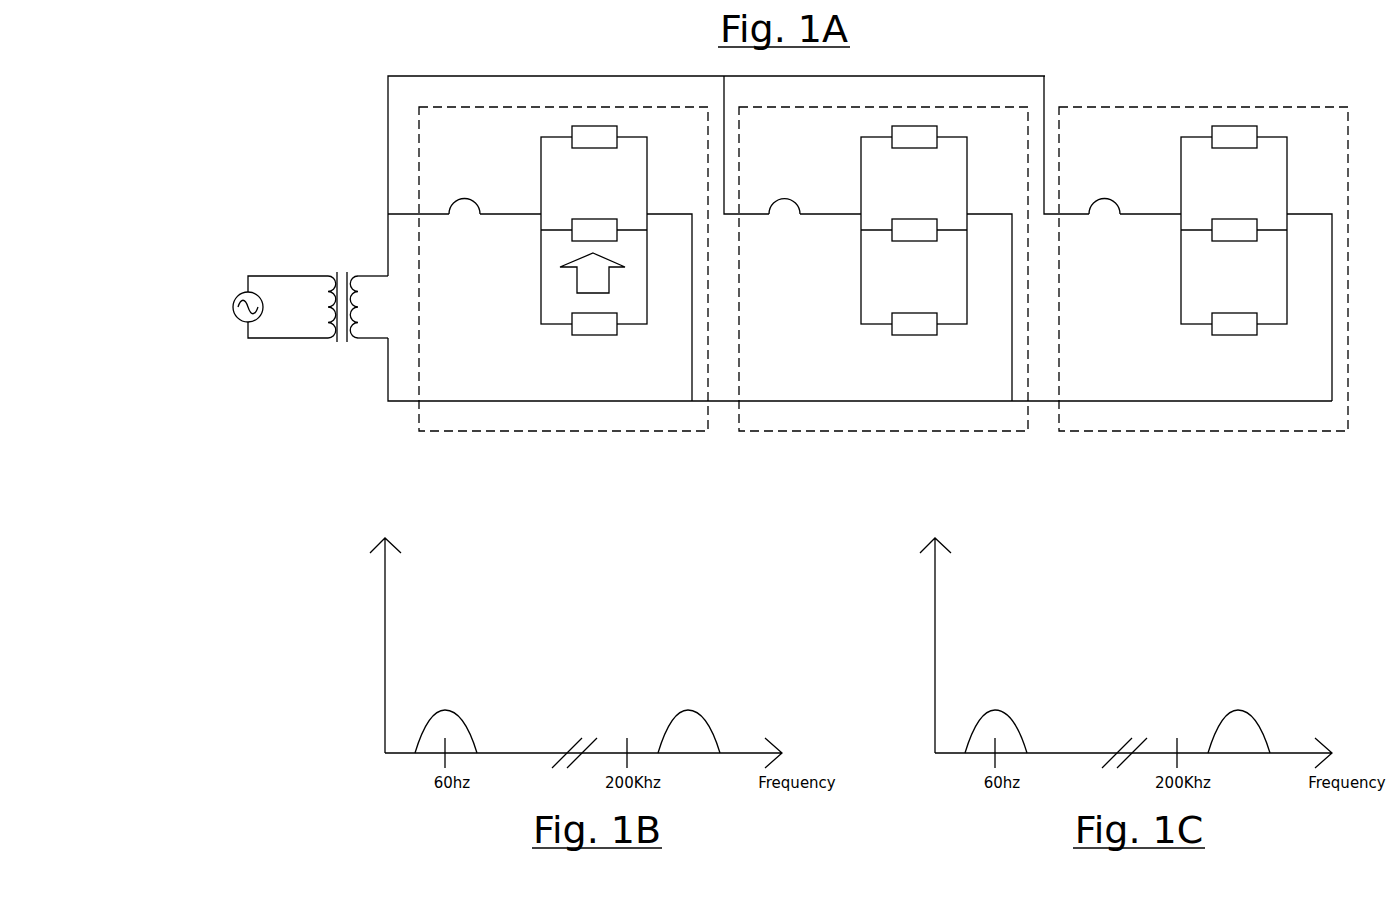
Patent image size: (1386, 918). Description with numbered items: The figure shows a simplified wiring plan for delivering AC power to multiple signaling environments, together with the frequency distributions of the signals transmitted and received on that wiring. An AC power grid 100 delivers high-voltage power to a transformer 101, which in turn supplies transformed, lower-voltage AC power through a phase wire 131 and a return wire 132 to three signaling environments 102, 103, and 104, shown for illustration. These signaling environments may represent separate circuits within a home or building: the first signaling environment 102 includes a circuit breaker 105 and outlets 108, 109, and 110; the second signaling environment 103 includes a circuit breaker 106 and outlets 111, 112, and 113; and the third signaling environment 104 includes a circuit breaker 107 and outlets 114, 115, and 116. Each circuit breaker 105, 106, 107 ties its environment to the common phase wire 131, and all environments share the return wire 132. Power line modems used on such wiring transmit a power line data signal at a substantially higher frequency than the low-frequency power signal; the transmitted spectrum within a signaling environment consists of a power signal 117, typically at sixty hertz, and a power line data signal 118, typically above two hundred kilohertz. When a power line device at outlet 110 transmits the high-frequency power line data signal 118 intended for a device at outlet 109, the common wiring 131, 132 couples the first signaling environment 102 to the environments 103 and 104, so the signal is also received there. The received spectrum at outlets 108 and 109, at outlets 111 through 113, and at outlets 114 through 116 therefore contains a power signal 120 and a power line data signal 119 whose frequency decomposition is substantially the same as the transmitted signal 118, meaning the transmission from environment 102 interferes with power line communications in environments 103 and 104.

In FIG. 1A, the AC power grid 100 is at (233, 292).
In FIG. 1A, the transformer 101 is at (343, 260).
In FIG. 1A, the signaling environment 102 is at (523, 445).
In FIG. 1A, the signaling environment 103 is at (890, 446).
In FIG. 1A, the signaling environment 104 is at (1195, 446).
In FIG. 1A, the circuit breaker 105 is at (463, 228).
In FIG. 1A, the circuit breaker 106 is at (783, 228).
In FIG. 1A, the circuit breaker 107 is at (1103, 228).
In FIG. 1A, the outlet 108 is at (639, 152).
In FIG. 1A, the outlet 109 is at (549, 220).
In FIG. 1A, the outlet 110 is at (639, 338).
In FIG. 1A, the outlet 111 is at (959, 152).
In FIG. 1A, the outlet 112 is at (959, 244).
In FIG. 1A, the outlet 113 is at (959, 338).
In FIG. 1A, the outlet 114 is at (1279, 152).
In FIG. 1A, the outlet 115 is at (1279, 244).
In FIG. 1A, the outlet 116 is at (1279, 338).
In FIG. 1B, the power signal 117 is at (444, 707).
In FIG. 1B, the power line data signal 118 is at (687, 707).
In FIG. 1C, the power line data signal 119 is at (1237, 707).
In FIG. 1C, the power signal 120 is at (994, 707).
In FIG. 1A, the phase wire 131 is at (373, 168).
In FIG. 1A, the return wire 132 is at (373, 384).